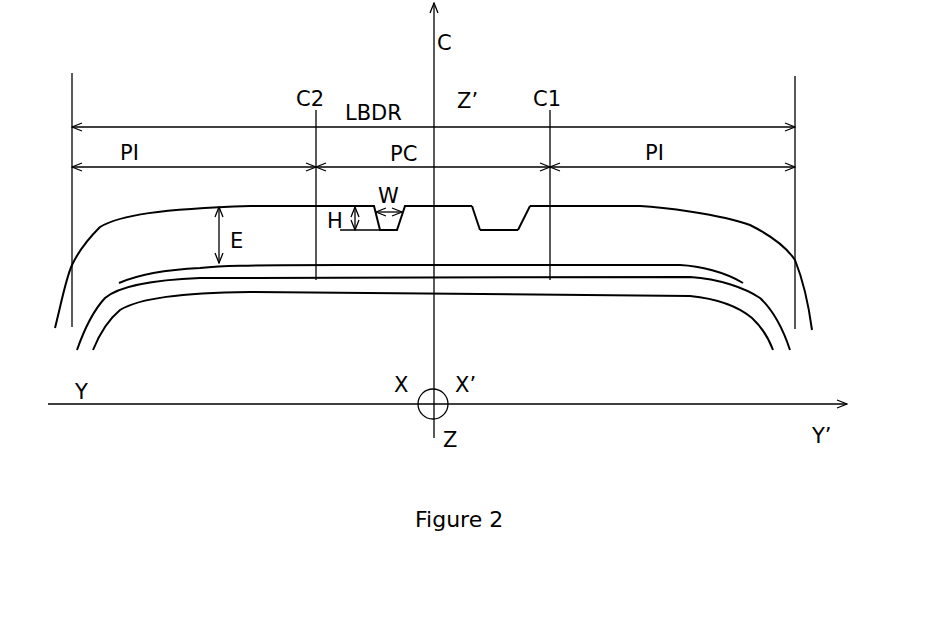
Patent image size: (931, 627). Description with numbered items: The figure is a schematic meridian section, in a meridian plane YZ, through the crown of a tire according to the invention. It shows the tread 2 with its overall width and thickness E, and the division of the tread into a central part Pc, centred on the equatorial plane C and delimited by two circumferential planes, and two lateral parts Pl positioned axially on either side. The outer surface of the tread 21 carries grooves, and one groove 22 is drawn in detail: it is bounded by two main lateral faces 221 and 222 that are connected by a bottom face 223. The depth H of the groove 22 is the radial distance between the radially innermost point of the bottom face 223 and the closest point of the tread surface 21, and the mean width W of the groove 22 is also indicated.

The tread 2 is at (803, 207).
The tread surface 21 is at (642, 206).
The groove 22 is at (500, 218).
The lateral face 221 is at (524, 218).
The lateral face 222 is at (472, 215).
The bottom face 223 is at (507, 230).